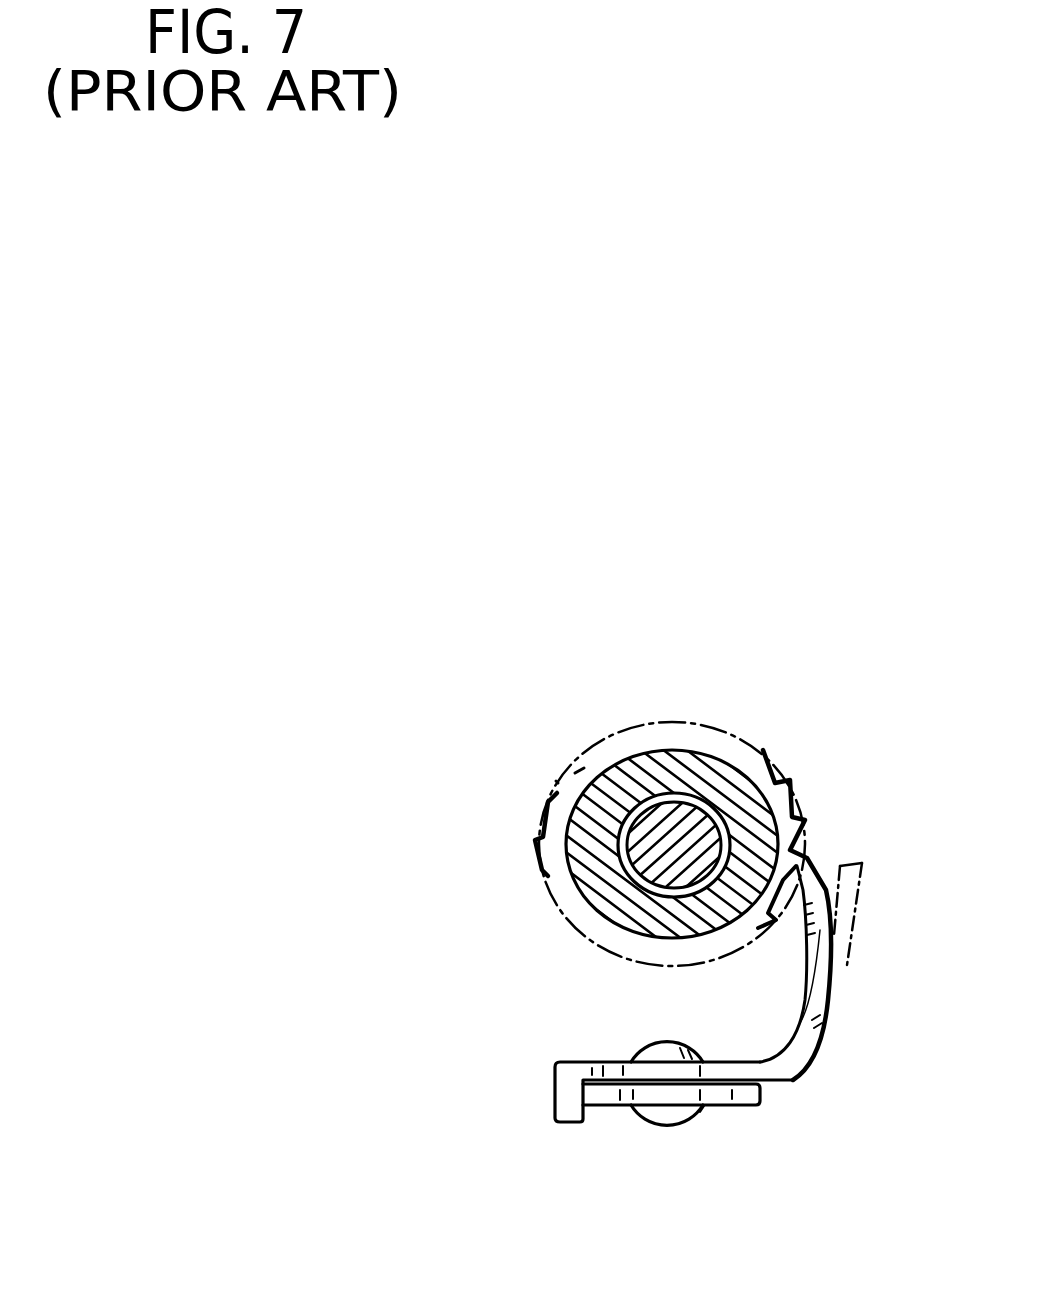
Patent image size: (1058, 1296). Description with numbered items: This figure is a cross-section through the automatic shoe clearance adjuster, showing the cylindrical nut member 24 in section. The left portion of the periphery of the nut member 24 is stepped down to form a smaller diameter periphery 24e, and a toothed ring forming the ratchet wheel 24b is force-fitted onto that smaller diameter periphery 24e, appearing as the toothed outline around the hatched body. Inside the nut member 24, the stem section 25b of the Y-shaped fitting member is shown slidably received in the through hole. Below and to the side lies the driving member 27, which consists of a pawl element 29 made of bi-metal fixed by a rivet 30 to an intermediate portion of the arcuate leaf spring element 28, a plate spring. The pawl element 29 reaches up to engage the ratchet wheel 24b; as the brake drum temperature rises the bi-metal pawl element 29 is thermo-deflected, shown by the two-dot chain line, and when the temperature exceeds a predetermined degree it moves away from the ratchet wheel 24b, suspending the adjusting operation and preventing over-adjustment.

The nut member 24 is at (790, 785).
The ratchet wheel 24b is at (806, 820).
The smaller diameter periphery 24e is at (548, 848).
The stem section 25b is at (665, 818).
The driving member 27 is at (536, 1114).
The leaf spring element 28 is at (763, 1095).
The pawl element 29 is at (817, 1053).
The rivet 30 is at (667, 1127).